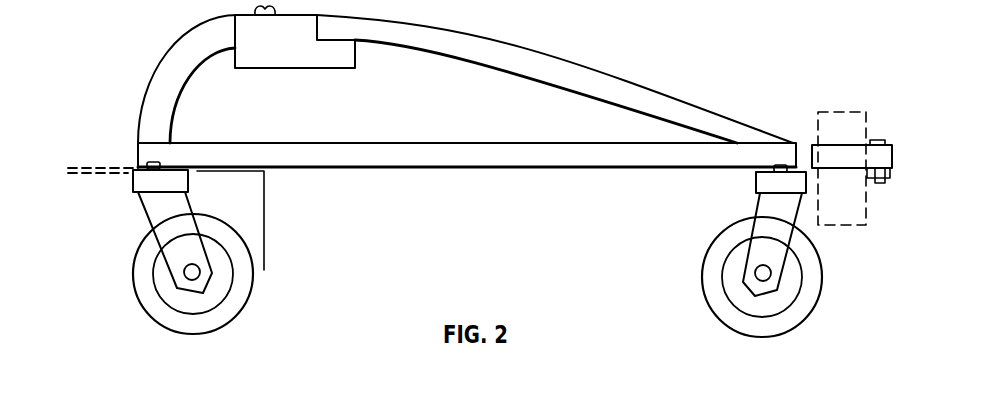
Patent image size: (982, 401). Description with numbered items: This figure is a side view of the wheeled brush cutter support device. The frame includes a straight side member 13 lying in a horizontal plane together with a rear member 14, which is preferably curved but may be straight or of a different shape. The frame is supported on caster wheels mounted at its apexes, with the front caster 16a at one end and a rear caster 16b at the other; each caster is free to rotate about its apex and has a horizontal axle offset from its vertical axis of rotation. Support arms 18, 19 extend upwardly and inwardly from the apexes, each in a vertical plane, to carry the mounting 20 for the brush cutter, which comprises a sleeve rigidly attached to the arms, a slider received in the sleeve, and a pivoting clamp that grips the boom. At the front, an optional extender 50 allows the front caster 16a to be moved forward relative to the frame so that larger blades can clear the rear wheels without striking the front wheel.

The side member 13 is at (513, 158).
The rear member 14 is at (850, 157).
The front caster 16a is at (243, 288).
The rear caster 16b is at (808, 302).
The support arm 18 is at (168, 75).
The support arm 19 is at (602, 75).
The mounting 20 is at (307, 58).
The extender 50 is at (88, 163).